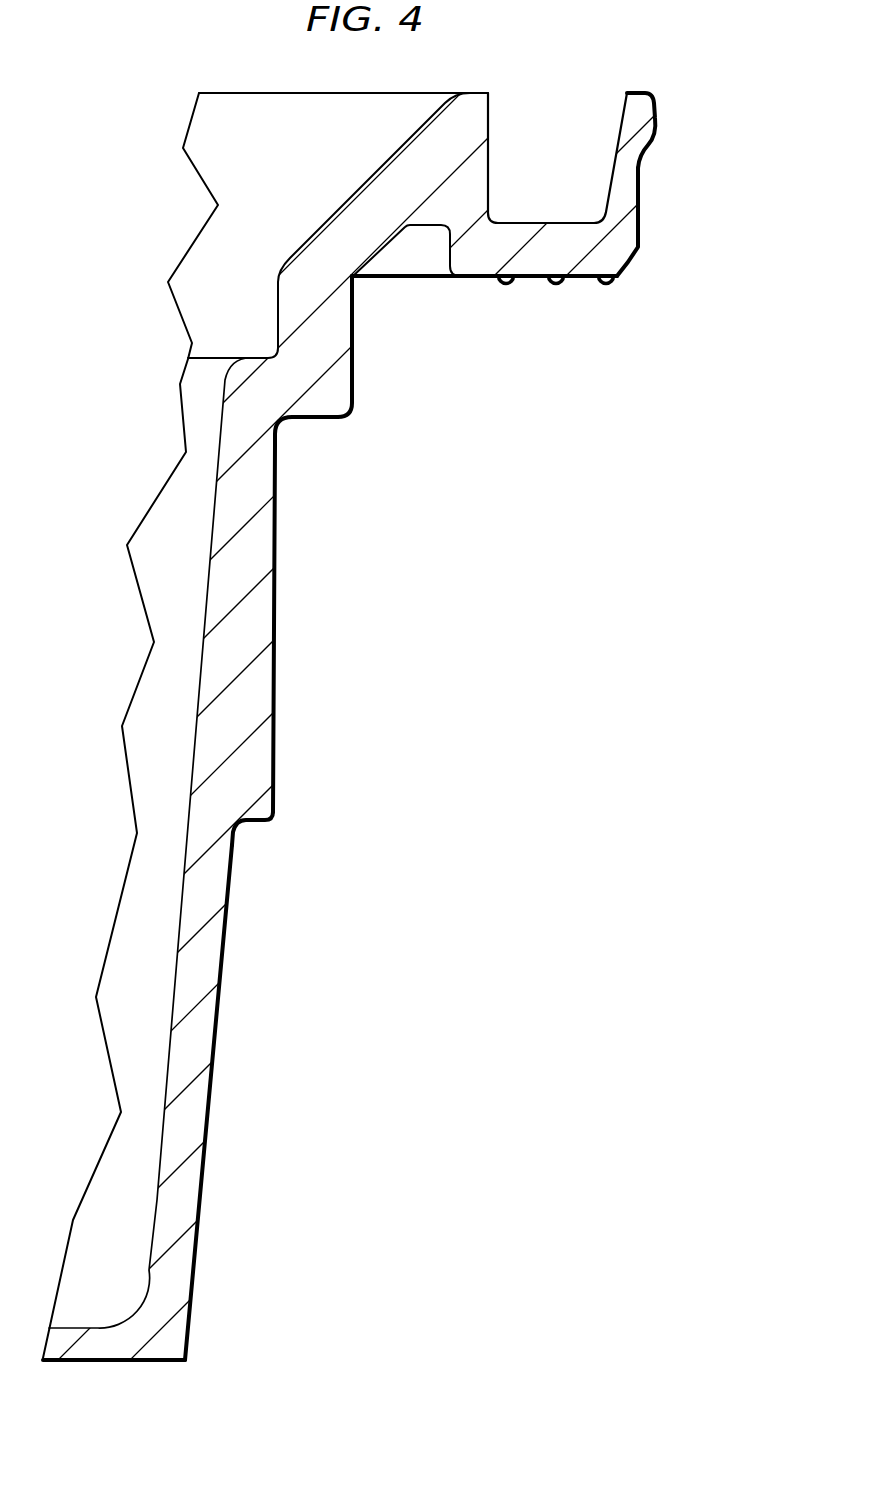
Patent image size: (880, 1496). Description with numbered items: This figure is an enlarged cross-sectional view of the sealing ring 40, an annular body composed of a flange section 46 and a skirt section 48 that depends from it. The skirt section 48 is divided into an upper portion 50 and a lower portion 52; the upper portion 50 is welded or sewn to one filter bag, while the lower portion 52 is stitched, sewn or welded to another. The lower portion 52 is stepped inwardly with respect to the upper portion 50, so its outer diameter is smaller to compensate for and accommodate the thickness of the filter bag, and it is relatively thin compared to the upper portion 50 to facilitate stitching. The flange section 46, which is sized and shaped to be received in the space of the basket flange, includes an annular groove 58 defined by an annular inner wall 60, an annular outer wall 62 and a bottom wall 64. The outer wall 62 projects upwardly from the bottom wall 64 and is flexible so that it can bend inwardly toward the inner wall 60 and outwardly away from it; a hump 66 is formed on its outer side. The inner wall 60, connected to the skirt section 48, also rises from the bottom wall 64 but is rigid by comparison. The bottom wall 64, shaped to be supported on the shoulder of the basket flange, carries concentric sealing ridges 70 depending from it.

The sealing ring 40 is at (476, 571).
The flange section 46 is at (675, 201).
The skirt section 48 is at (258, 852).
The upper portion 50 is at (276, 688).
The lower portion 52 is at (207, 1099).
The annular groove 58 is at (553, 130).
The annular inner wall 60 is at (492, 148).
The annular outer wall 62 is at (635, 104).
The bottom wall 64 is at (481, 278).
The hump 66 is at (654, 133).
The sealing ridges 70 is at (505, 288).